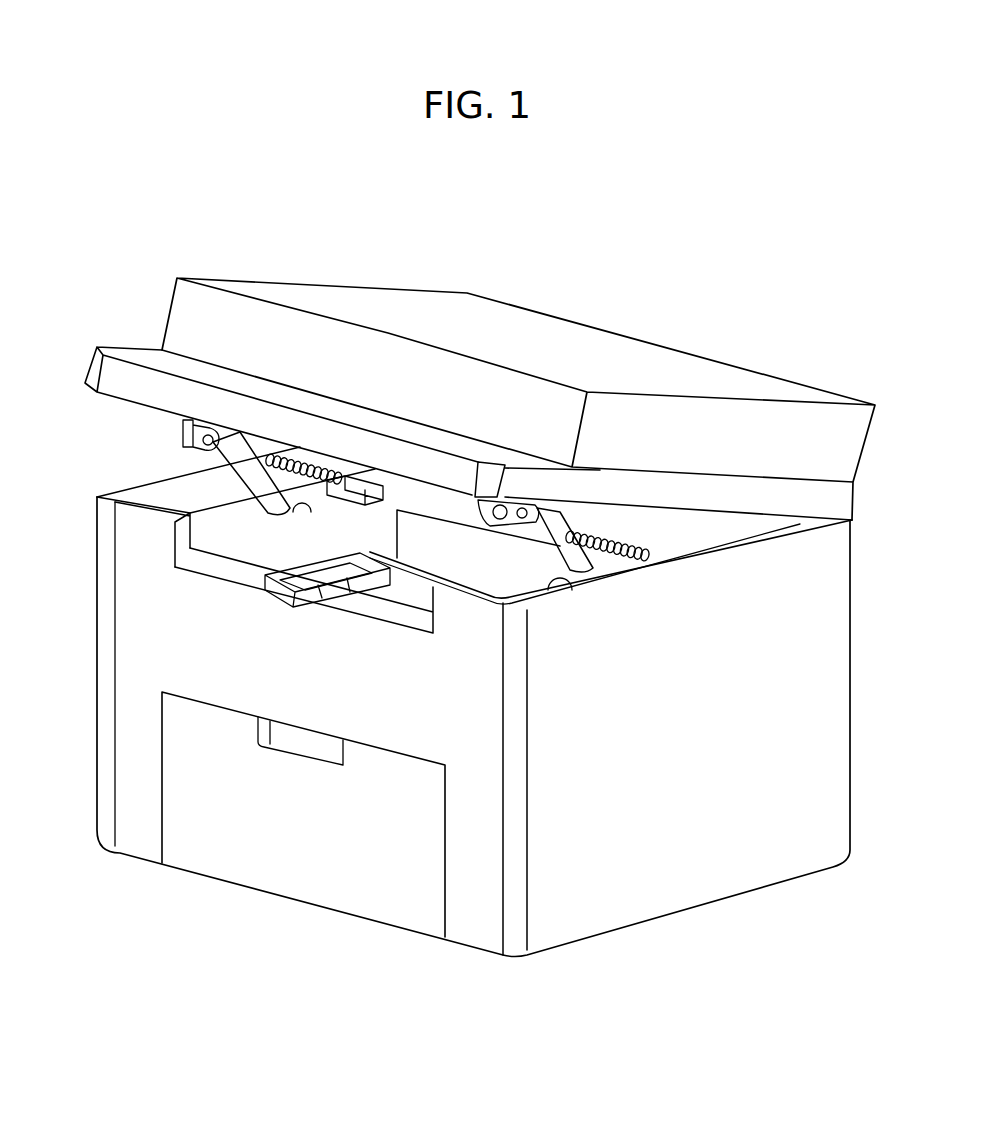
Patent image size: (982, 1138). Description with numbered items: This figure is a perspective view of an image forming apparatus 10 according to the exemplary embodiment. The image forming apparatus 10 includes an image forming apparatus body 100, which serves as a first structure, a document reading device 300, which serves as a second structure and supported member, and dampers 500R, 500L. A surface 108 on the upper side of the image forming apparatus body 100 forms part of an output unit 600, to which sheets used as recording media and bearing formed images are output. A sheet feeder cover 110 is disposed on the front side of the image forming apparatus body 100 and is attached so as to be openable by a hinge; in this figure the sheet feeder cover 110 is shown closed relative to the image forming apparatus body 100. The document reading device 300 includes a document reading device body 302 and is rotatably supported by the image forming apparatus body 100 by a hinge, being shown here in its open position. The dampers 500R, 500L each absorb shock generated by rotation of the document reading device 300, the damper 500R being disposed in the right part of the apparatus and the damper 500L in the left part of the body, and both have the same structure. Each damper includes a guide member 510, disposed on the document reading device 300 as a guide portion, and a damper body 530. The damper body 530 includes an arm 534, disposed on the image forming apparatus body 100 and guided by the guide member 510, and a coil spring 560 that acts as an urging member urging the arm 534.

The image forming apparatus 10 is at (686, 280).
The image forming apparatus body 100 is at (138, 842).
The surface 108 is at (247, 562).
The sheet feeder cover 110 is at (258, 875).
The document reading device 300 is at (92, 365).
The document reading device body 302 is at (116, 385).
The damper 500L is at (182, 430).
The damper 500R is at (549, 521).
The guide member 510 is at (482, 505).
The damper body 530 is at (529, 528).
The arm 534 is at (551, 557).
The coil spring 560 is at (663, 560).
The output unit 600 is at (373, 547).